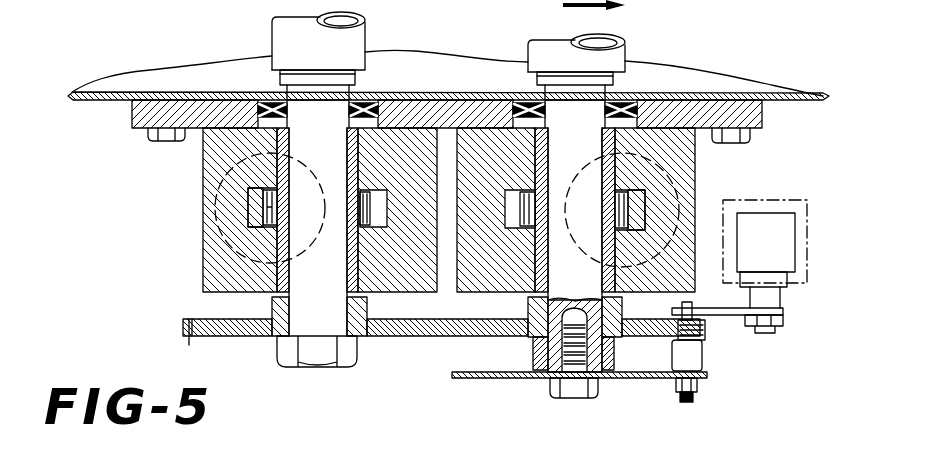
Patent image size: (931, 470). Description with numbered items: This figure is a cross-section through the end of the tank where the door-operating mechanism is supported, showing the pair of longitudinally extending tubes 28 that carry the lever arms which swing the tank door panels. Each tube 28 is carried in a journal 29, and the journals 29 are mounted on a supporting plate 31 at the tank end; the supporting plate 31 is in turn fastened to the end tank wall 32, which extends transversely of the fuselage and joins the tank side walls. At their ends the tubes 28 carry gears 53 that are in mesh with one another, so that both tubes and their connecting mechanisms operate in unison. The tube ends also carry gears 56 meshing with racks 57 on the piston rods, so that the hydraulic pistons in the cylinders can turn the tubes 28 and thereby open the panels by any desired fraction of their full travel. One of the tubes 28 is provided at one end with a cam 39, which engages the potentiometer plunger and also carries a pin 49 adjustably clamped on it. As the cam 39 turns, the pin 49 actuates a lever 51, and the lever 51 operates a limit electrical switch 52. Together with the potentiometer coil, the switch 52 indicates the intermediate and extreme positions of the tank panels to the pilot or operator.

The tube 28 is at (363, 45).
The journal 29 is at (389, 103).
The supporting plate 31 is at (132, 119).
The end tank wall 32 is at (112, 92).
The cam 39 is at (476, 375).
The pin 49 is at (702, 356).
The lever 51 is at (730, 318).
The limit electrical switch 52 is at (765, 254).
The gear 53 is at (185, 326).
The gear 56 is at (265, 212).
The rack 57 is at (253, 200).